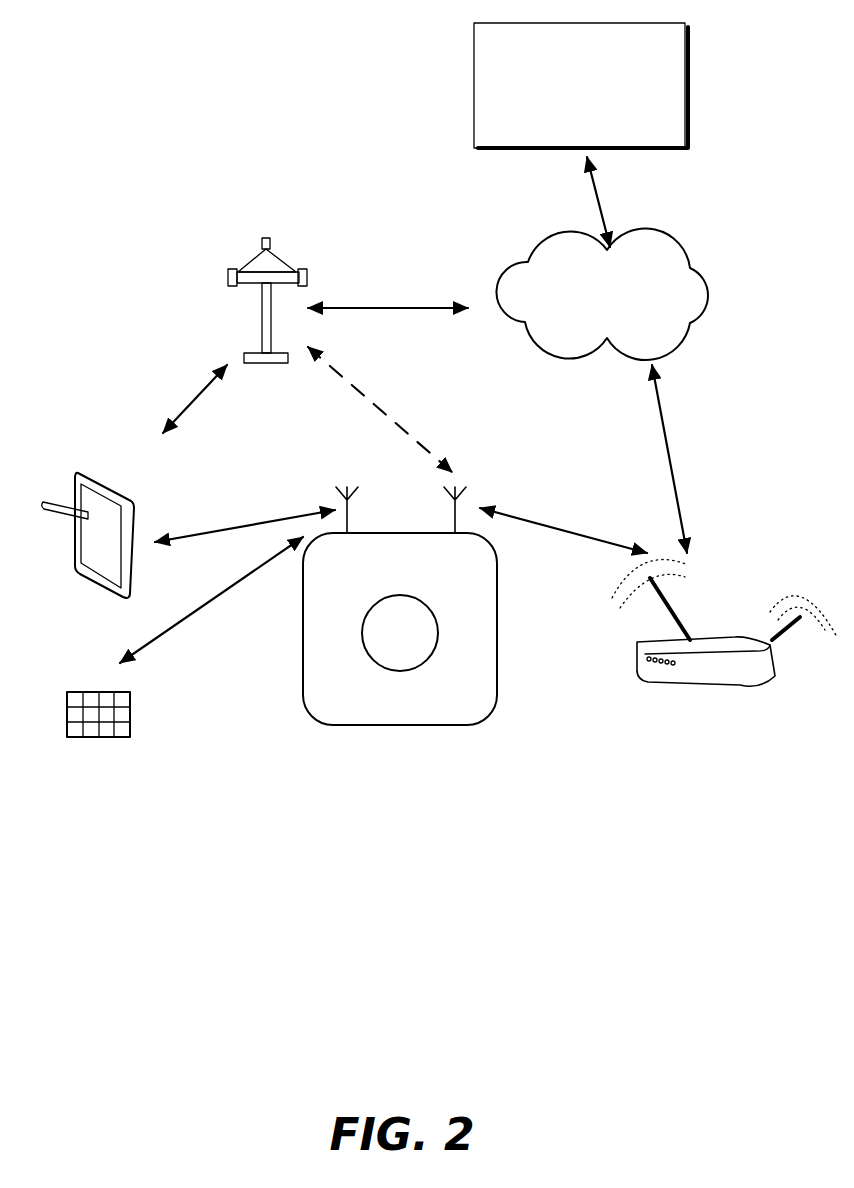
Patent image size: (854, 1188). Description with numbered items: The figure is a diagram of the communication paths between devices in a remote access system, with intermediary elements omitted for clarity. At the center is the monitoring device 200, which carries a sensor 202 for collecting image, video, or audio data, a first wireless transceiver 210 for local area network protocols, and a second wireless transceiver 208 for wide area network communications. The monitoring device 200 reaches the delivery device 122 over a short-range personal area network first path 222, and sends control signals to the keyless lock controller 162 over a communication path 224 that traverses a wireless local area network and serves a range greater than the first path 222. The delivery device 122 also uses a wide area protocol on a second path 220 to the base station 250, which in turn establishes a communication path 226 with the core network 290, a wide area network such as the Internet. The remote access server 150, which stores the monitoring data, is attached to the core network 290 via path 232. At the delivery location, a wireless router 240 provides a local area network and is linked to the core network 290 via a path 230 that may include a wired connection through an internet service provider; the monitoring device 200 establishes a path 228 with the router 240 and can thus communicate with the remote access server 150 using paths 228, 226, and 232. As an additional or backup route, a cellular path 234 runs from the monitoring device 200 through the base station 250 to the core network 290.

The remote access server 150 is at (581, 85).
The core network 290 is at (706, 268).
The base station 250 is at (266, 238).
The delivery device 122 is at (105, 481).
The keyless lock controller 162 is at (72, 692).
The monitoring device 200 is at (430, 587).
The sensor 202 is at (401, 596).
The second wireless transceiver 208 is at (453, 525).
The first wireless transceiver 210 is at (357, 490).
The wireless router 240 is at (745, 686).
The second path 220 is at (200, 394).
The first path 222 is at (285, 517).
The communication path 224 is at (220, 598).
The communication path 226 is at (432, 306).
The path 228 is at (558, 528).
The path 230 is at (667, 456).
The path 232 is at (602, 215).
The path 234 is at (412, 432).